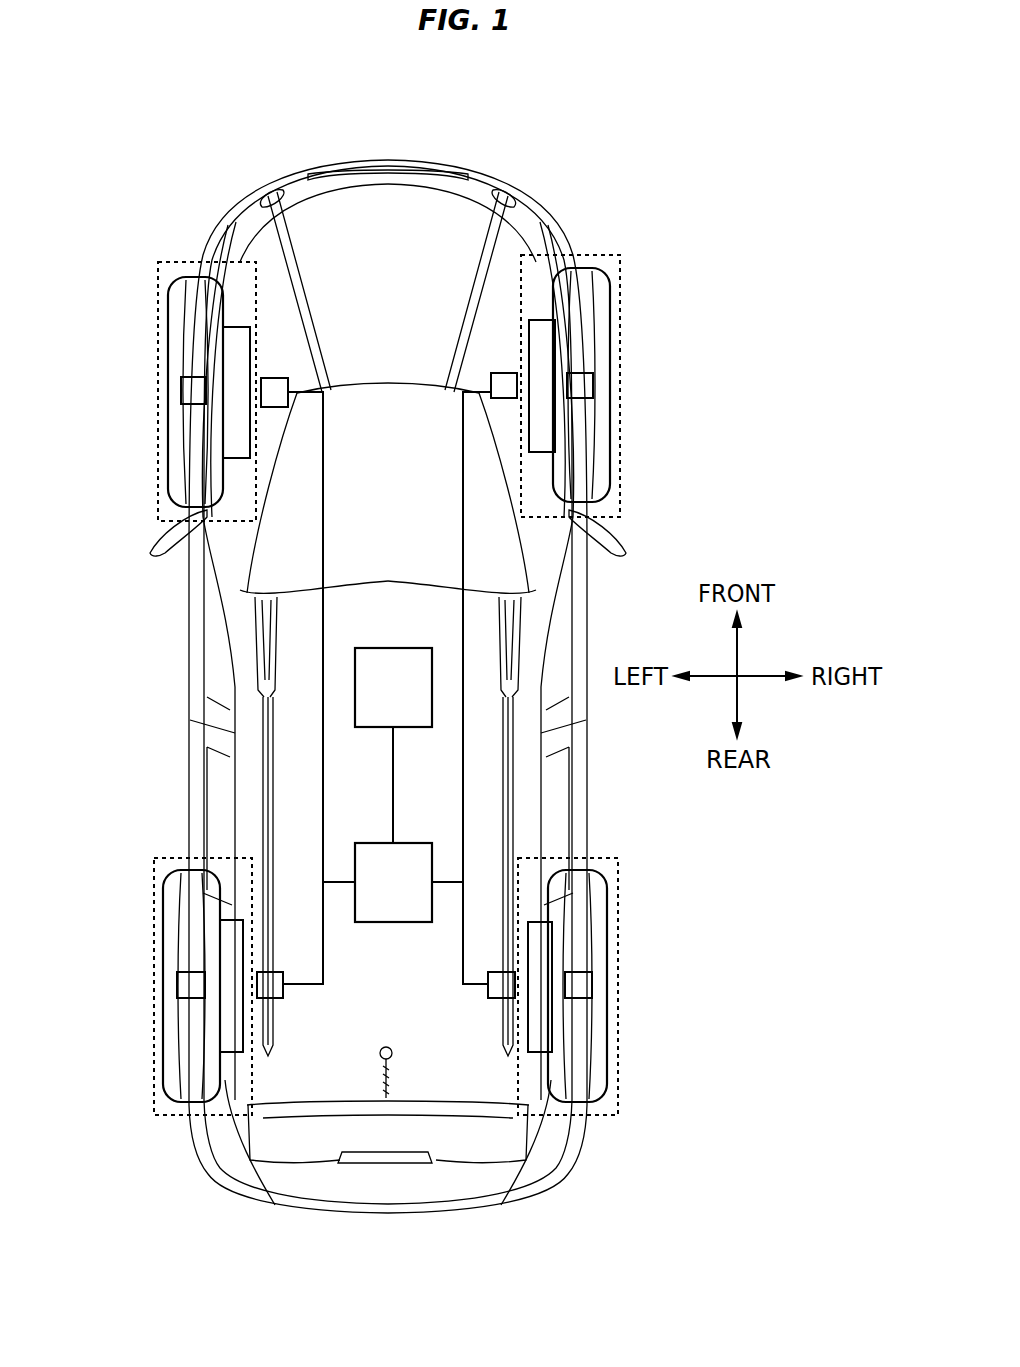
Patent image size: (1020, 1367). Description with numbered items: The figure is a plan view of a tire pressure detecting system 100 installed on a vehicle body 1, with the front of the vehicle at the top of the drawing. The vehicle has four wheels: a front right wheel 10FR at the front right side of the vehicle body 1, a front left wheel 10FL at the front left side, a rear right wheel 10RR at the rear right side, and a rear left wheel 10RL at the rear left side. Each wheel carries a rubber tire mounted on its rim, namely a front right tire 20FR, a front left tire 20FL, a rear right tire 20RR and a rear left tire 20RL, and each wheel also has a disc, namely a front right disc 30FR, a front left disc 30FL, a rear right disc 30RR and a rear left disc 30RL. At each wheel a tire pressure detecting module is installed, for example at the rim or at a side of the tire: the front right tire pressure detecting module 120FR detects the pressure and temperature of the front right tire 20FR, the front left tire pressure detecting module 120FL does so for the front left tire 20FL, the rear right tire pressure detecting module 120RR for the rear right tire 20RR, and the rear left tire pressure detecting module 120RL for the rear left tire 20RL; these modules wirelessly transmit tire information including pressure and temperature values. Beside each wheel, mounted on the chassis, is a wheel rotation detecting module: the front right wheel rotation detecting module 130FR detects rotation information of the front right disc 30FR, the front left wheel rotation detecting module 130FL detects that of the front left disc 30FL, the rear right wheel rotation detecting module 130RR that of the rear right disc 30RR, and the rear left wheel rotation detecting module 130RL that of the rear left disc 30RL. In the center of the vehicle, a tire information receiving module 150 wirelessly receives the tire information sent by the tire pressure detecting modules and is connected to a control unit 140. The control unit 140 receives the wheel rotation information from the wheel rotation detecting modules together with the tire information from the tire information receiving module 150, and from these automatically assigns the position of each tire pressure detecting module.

The vehicle body 1 is at (365, 161).
The tire pressure detecting system 100 is at (163, 111).
The front left wheel 10FL is at (158, 465).
The front right wheel 10FR is at (620, 452).
The rear left wheel 10RL is at (154, 1045).
The rear right wheel 10RR is at (618, 1050).
The front left tire 20FL is at (237, 327).
The front right tire 20FR is at (542, 320).
The rear left tire 20RL is at (231, 920).
The rear right tire 20RR is at (540, 922).
The front left disc 30FL is at (200, 275).
The front right disc 30FR is at (566, 268).
The rear left disc 30RL is at (215, 1102).
The rear right disc 30RR is at (562, 1100).
The front left tire pressure detecting module 120FL is at (193, 377).
The front right tire pressure detecting module 120FR is at (572, 373).
The rear left tire pressure detecting module 120RL is at (191, 972).
The rear right tire pressure detecting module 120RR is at (580, 972).
The front left wheel rotation detecting module 130FL is at (272, 378).
The front right wheel rotation detecting module 130FR is at (505, 373).
The rear left wheel rotation detecting module 130RL is at (272, 998).
The rear right wheel rotation detecting module 130RR is at (505, 998).
The control unit 140 is at (372, 843).
The tire information receiving module 150 is at (355, 687).